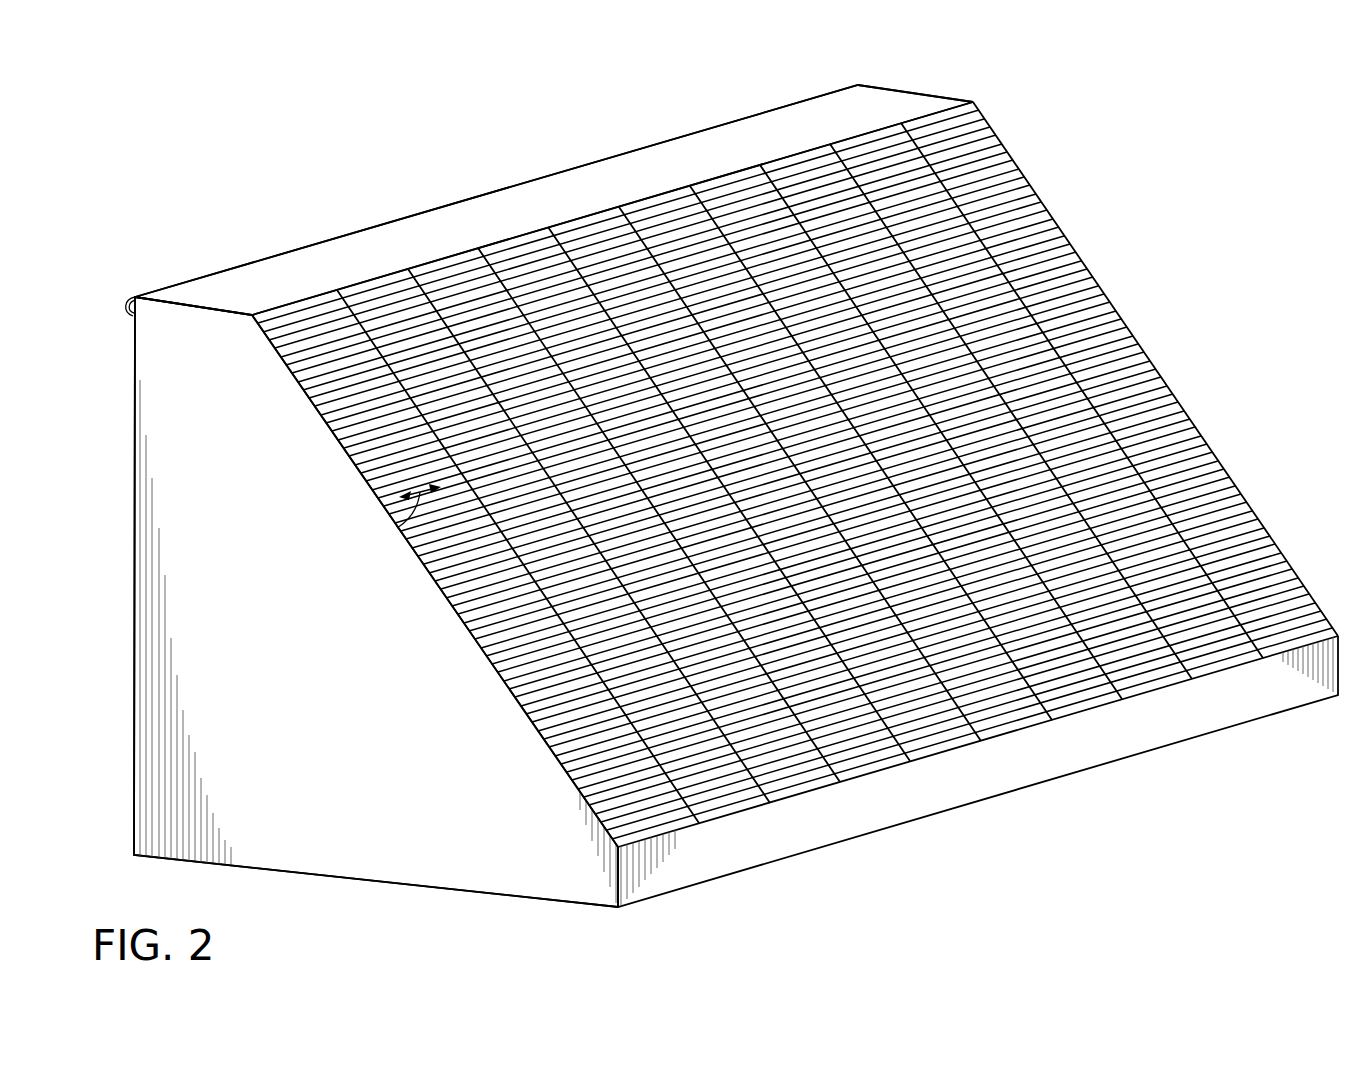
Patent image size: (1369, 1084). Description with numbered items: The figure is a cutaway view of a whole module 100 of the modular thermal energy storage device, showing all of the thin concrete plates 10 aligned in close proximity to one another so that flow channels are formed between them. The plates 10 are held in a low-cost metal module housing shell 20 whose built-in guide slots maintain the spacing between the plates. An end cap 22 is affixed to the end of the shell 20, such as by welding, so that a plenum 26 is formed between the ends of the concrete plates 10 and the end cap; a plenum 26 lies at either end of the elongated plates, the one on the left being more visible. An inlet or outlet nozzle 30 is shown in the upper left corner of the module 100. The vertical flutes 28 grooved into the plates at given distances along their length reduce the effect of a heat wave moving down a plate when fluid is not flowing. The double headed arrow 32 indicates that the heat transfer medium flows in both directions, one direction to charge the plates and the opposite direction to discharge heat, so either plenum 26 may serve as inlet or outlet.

The module 100 is at (640, 99).
The concrete plates 10 is at (1000, 166).
The module housing shell 20 is at (480, 230).
The end cap 22 is at (190, 693).
The plenum 26 is at (323, 415).
The flutes 28 is at (337, 292).
The inlet or outlet nozzle 30 is at (130, 299).
The double headed arrow 32 is at (397, 528).